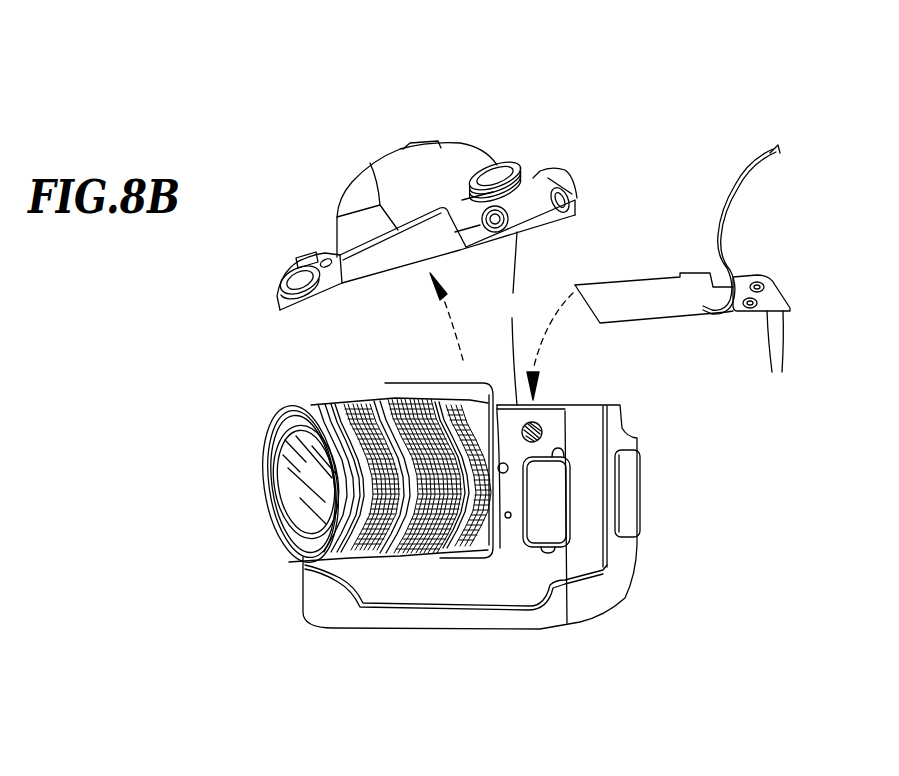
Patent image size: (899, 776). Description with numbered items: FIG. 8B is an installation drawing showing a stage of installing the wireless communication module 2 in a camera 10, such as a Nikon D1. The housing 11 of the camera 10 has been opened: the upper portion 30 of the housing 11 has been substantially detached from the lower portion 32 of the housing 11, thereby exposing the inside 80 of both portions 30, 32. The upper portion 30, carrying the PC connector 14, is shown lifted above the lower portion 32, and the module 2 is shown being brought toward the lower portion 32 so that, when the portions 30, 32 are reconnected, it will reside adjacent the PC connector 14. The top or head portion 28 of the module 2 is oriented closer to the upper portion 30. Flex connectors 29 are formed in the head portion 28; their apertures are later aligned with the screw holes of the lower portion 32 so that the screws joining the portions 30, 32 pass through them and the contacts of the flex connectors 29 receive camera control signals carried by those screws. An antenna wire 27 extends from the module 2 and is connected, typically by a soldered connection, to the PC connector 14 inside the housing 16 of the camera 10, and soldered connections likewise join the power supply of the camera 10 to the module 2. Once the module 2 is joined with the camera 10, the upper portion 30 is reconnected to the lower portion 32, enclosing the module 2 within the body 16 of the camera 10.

The camera 10 is at (678, 82).
The upper portion of housing 30 is at (370, 187).
The PC connector 14 is at (500, 166).
The antenna wire 27 is at (713, 210).
The head portion of module 28 is at (770, 291).
The wireless communication module 2 is at (650, 324).
The flex connectors 29 is at (775, 357).
The inside of housing portions 80 is at (511, 318).
The lower portion of housing 32 is at (630, 540).
The body of camera 16 is at (490, 583).
The housing 11 is at (583, 550).